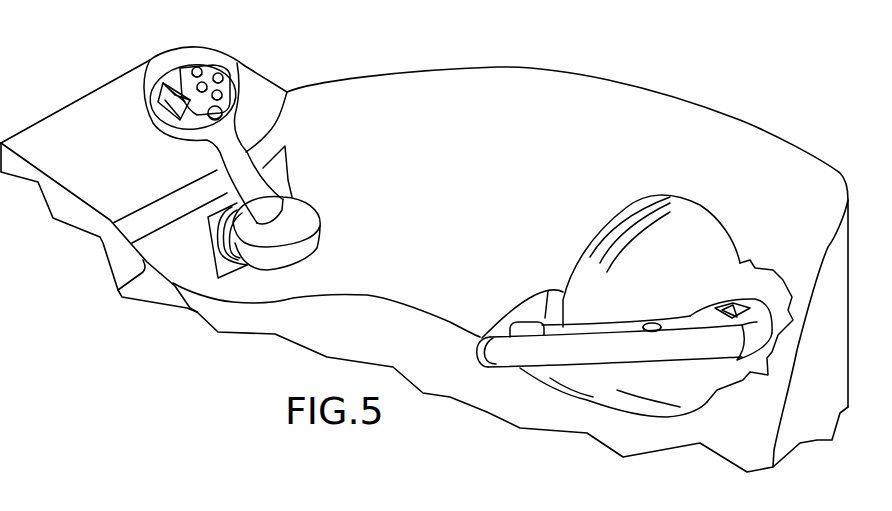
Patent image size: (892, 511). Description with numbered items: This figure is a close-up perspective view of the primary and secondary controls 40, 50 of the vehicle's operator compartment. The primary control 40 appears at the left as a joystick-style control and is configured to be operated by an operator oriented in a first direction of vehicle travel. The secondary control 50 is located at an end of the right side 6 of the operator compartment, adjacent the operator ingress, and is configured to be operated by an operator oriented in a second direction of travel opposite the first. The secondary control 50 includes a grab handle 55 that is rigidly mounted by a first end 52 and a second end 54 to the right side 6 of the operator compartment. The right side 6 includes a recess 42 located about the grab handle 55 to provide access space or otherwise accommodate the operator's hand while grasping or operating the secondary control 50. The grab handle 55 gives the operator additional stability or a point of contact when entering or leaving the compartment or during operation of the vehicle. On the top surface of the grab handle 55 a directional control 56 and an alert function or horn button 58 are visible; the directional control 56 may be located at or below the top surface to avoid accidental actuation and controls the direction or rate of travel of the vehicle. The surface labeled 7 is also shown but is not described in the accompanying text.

The right side 6 is at (640, 108).
The console top surface 7 is at (80, 117).
The primary control 40 is at (241, 72).
The recess 42 is at (702, 228).
The secondary control 50 is at (610, 378).
The first end 52 is at (755, 334).
The second end 54 is at (510, 330).
The grab handle 55 is at (607, 330).
The directional control 56 is at (720, 306).
The horn button 58 is at (652, 322).